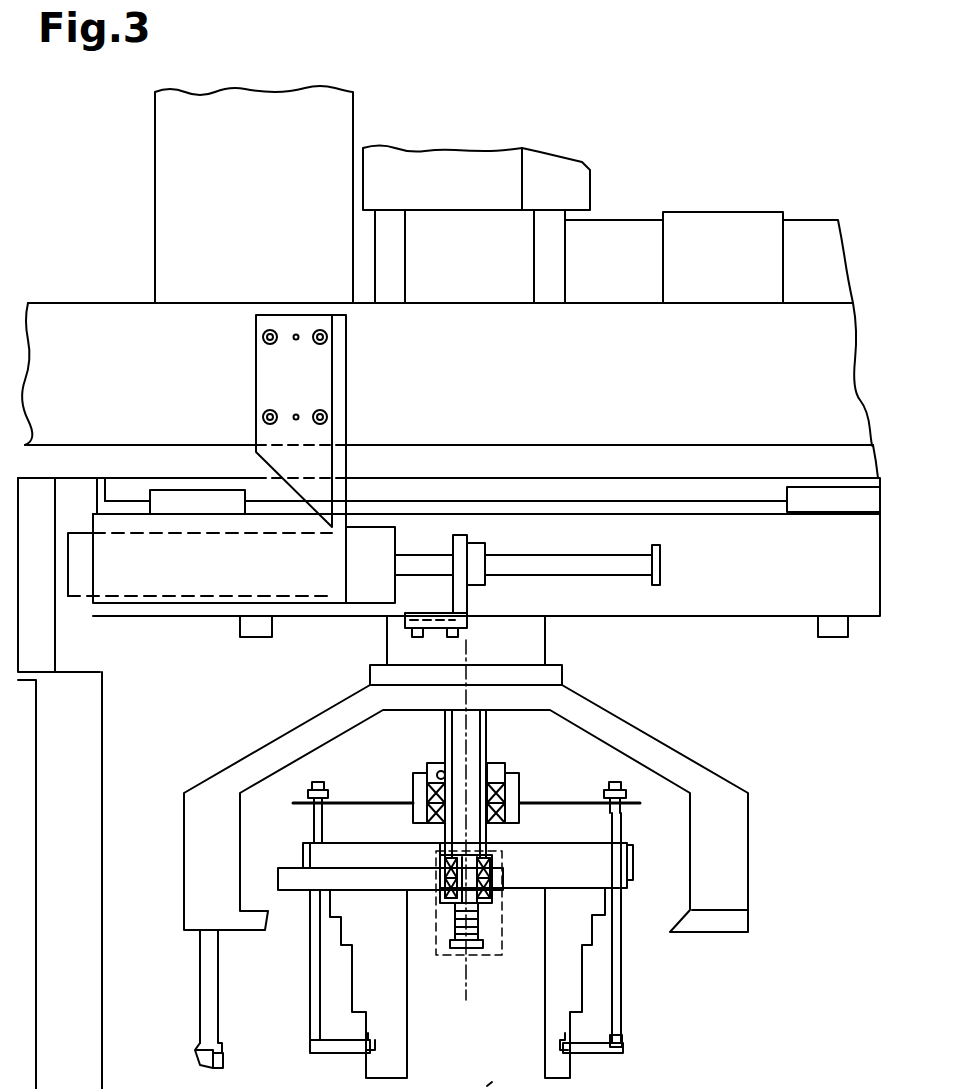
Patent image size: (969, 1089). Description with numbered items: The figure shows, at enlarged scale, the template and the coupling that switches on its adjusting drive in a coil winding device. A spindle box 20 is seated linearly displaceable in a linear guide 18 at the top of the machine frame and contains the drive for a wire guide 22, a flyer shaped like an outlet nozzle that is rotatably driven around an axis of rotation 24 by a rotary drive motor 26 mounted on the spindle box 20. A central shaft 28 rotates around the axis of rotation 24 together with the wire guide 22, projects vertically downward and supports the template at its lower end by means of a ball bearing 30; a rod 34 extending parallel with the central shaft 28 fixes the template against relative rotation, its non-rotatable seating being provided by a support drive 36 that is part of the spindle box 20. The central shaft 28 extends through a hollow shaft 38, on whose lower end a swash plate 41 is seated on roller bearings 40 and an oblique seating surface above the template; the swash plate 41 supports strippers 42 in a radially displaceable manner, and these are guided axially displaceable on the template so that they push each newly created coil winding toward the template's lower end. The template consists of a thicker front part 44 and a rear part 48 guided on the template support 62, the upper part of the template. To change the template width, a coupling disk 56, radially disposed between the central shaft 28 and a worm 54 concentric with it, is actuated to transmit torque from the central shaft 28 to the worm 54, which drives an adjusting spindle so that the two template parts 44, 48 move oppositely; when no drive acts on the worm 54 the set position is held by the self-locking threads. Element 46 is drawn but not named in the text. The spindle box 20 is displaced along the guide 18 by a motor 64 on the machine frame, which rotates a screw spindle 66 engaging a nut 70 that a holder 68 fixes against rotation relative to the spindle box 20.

The linear guide 18 is at (617, 318).
The spindle box 20 is at (686, 600).
The wire guide 22 is at (228, 1060).
The axis of rotation 24 is at (465, 978).
The rotary drive motor 26 is at (323, 125).
The central shaft 28 is at (470, 738).
The ball bearing 30 is at (490, 903).
The rod 34 is at (503, 1079).
The support drive 36 is at (390, 650).
The hollow shaft 38 is at (442, 735).
The roller bearings 40 is at (413, 785).
The swash plate 41 is at (552, 803).
The strippers 42 is at (618, 970).
The template front part 44 is at (370, 1078).
The block 46 is at (690, 228).
The template rear part 48 is at (550, 990).
The worm 54 is at (505, 857).
The coupling disk 56 is at (438, 850).
The template support 62 is at (335, 852).
The motor 64 is at (190, 582).
The screw spindle 66 is at (595, 567).
The holder 68 is at (462, 540).
The nut 70 is at (478, 555).